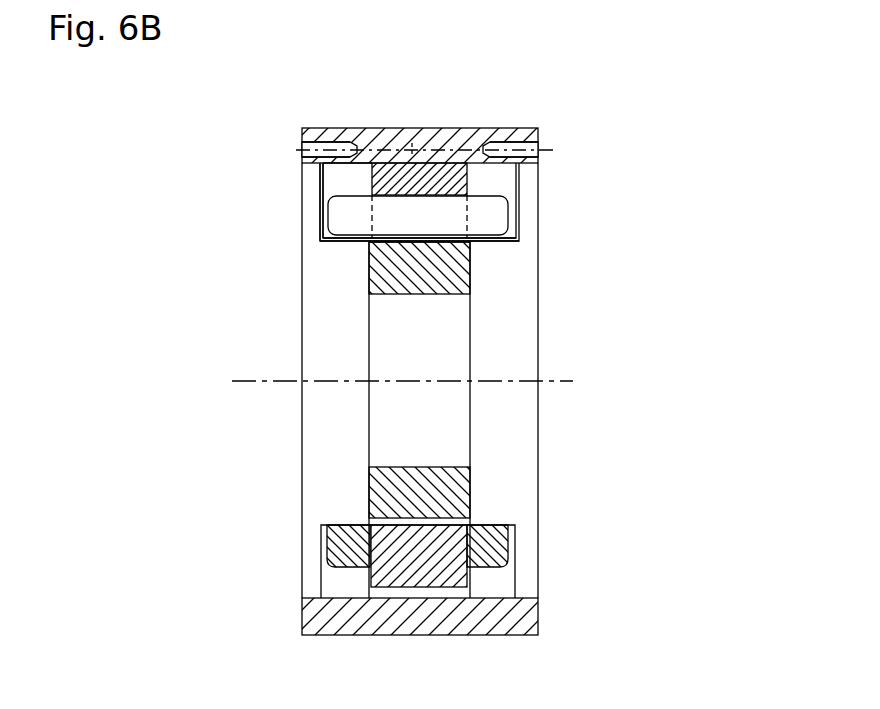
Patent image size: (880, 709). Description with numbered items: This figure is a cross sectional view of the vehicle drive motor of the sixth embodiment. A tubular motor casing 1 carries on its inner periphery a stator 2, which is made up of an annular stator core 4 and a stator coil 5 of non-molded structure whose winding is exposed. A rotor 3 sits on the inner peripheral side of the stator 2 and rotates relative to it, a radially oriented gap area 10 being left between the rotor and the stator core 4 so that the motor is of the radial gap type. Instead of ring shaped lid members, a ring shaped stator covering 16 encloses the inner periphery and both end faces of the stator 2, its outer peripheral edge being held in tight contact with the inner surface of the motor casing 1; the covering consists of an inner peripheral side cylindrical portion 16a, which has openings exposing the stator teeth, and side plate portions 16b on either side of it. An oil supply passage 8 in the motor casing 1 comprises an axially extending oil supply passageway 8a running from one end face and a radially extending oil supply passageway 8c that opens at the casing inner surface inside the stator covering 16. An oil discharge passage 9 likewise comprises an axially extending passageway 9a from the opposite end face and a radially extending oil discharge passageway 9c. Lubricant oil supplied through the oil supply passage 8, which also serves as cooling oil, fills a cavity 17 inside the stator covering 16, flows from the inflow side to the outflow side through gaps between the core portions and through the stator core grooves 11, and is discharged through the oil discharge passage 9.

The motor casing 1 is at (358, 127).
The stator 2 is at (629, 152).
The rotor 3 is at (480, 295).
The stator core 4 is at (467, 186).
The stator coil 5 is at (510, 208).
The oil supply passage 8 is at (176, 128).
The axially extending oil supply passageway 8a is at (304, 138).
The radially extending oil supply passageway 8c is at (340, 163).
The oil discharge passage 9 is at (631, 77).
The axially extending oil discharge passageway 9a is at (506, 148).
The radially extending oil discharge passageway 9c is at (494, 165).
The gap area 10 is at (410, 243).
The stator core grooves 11 is at (412, 143).
The stator covering 16 is at (164, 212).
The inner peripheral side cylindrical portion 16a is at (348, 242).
The side plate portions 16b is at (320, 197).
The cavity 17 is at (352, 188).